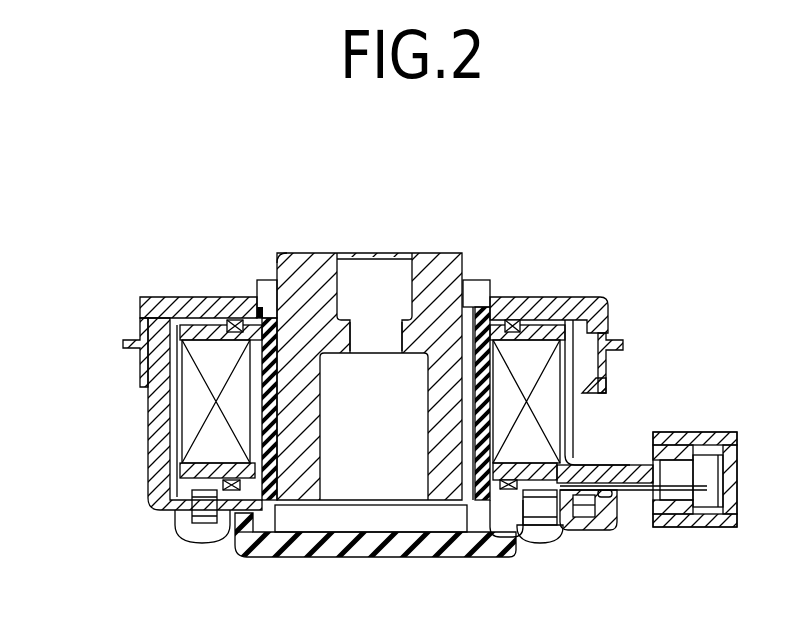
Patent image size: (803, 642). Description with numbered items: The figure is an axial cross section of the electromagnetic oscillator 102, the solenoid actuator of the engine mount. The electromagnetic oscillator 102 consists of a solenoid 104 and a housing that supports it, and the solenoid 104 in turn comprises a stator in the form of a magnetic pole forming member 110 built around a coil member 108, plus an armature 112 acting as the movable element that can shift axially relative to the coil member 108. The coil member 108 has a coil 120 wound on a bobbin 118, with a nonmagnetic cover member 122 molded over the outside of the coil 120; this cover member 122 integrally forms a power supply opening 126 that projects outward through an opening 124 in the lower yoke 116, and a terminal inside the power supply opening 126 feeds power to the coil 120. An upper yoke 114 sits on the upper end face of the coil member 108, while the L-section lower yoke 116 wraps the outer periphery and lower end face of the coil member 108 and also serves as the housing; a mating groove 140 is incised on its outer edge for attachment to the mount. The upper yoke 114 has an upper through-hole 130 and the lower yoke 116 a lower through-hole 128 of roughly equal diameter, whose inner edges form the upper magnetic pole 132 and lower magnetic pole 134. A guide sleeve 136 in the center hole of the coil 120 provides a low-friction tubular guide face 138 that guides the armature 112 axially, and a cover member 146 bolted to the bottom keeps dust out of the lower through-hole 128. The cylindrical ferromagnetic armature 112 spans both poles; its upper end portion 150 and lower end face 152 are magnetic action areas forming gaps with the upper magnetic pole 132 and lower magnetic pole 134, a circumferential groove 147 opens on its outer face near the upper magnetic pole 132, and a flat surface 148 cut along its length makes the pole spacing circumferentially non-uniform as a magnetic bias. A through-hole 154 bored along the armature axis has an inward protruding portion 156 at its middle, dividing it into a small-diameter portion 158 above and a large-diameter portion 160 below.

The electromagnetic oscillator 102 is at (520, 124).
The solenoid 104 is at (497, 200).
The coil member 108 is at (590, 419).
The magnetic pole forming member 110 is at (627, 296).
The armature 112 is at (320, 283).
The upper yoke 114 is at (190, 300).
The lower yoke 116 is at (157, 404).
The bobbin 118 is at (495, 388).
The coil 120 is at (535, 397).
The cover member 122 is at (555, 327).
The opening 124 is at (590, 407).
The power supply opening 126 is at (678, 448).
The lower through-hole 128 is at (285, 518).
The upper through-hole 130 is at (264, 298).
The upper magnetic pole 132 is at (482, 303).
The lower magnetic pole 134 is at (490, 515).
The guide sleeve 136 is at (265, 423).
The tubular guide face 138 is at (452, 457).
The mating groove 140 is at (138, 335).
The cover member 146 is at (355, 552).
The circumferential groove 147 is at (258, 287).
The flat surface 148 is at (500, 305).
The upper end portion 150 is at (286, 262).
The lower end face 152 is at (300, 507).
The through-hole 154 is at (338, 158).
The inward protruding portion 156 is at (338, 340).
The small-diameter portion 158 is at (408, 272).
The large-diameter portion 160 is at (425, 390).